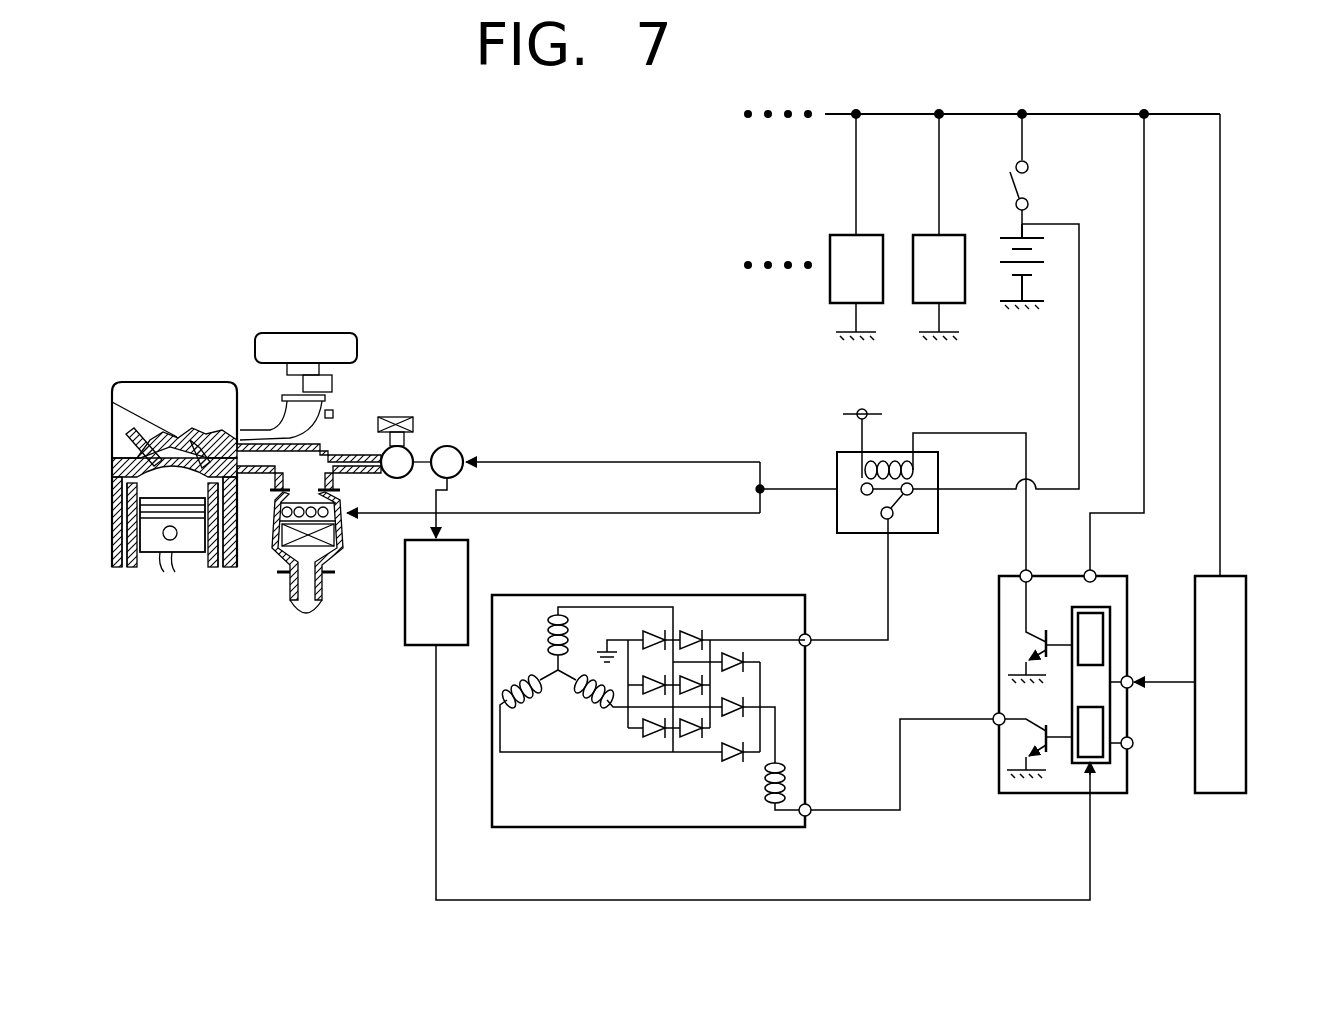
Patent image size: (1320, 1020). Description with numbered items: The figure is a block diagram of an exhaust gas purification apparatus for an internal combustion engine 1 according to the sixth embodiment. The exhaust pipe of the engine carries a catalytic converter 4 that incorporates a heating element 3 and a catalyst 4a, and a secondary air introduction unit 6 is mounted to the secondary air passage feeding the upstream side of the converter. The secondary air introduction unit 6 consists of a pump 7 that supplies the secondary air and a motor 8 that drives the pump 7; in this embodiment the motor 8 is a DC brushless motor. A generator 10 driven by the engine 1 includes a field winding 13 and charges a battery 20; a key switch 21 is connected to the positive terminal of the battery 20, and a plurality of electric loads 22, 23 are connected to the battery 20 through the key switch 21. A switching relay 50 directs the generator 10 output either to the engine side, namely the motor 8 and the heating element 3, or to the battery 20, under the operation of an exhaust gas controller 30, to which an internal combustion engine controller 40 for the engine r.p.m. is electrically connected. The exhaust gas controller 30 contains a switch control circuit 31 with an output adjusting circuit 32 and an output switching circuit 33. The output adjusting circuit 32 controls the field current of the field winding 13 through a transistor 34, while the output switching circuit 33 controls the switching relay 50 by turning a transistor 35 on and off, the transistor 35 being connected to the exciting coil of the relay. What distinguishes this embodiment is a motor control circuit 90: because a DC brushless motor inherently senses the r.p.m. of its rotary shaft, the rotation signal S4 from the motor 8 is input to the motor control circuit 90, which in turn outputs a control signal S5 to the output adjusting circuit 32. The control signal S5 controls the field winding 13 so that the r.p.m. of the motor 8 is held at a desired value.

The internal combustion engine 1 is at (160, 390).
The heating element 3 is at (345, 518).
The catalytic converter 4 is at (270, 552).
The catalyst 4a is at (340, 543).
The secondary air introduction unit 6 is at (536, 372).
The pump 7 is at (412, 448).
The motor 8 is at (455, 447).
The rotation signal S4 is at (455, 490).
The control signal S5 is at (436, 790).
The motor control circuit 90 is at (405, 618).
The generator 10 is at (651, 739).
The field winding 13 is at (760, 788).
The switching relay 50 is at (940, 533).
The battery 20 is at (998, 267).
The key switch 21 is at (1017, 183).
The electric load 22 is at (913, 235).
The electric load 23 is at (830, 235).
The exhaust gas controller 30 is at (1057, 684).
The switch control circuit 31 is at (1066, 679).
The output adjusting circuit 32 is at (1090, 730).
The output switching circuit 33 is at (1090, 622).
The transistor 34 is at (1030, 745).
The transistor 35 is at (1030, 633).
The internal combustion engine controller 40 is at (1246, 690).